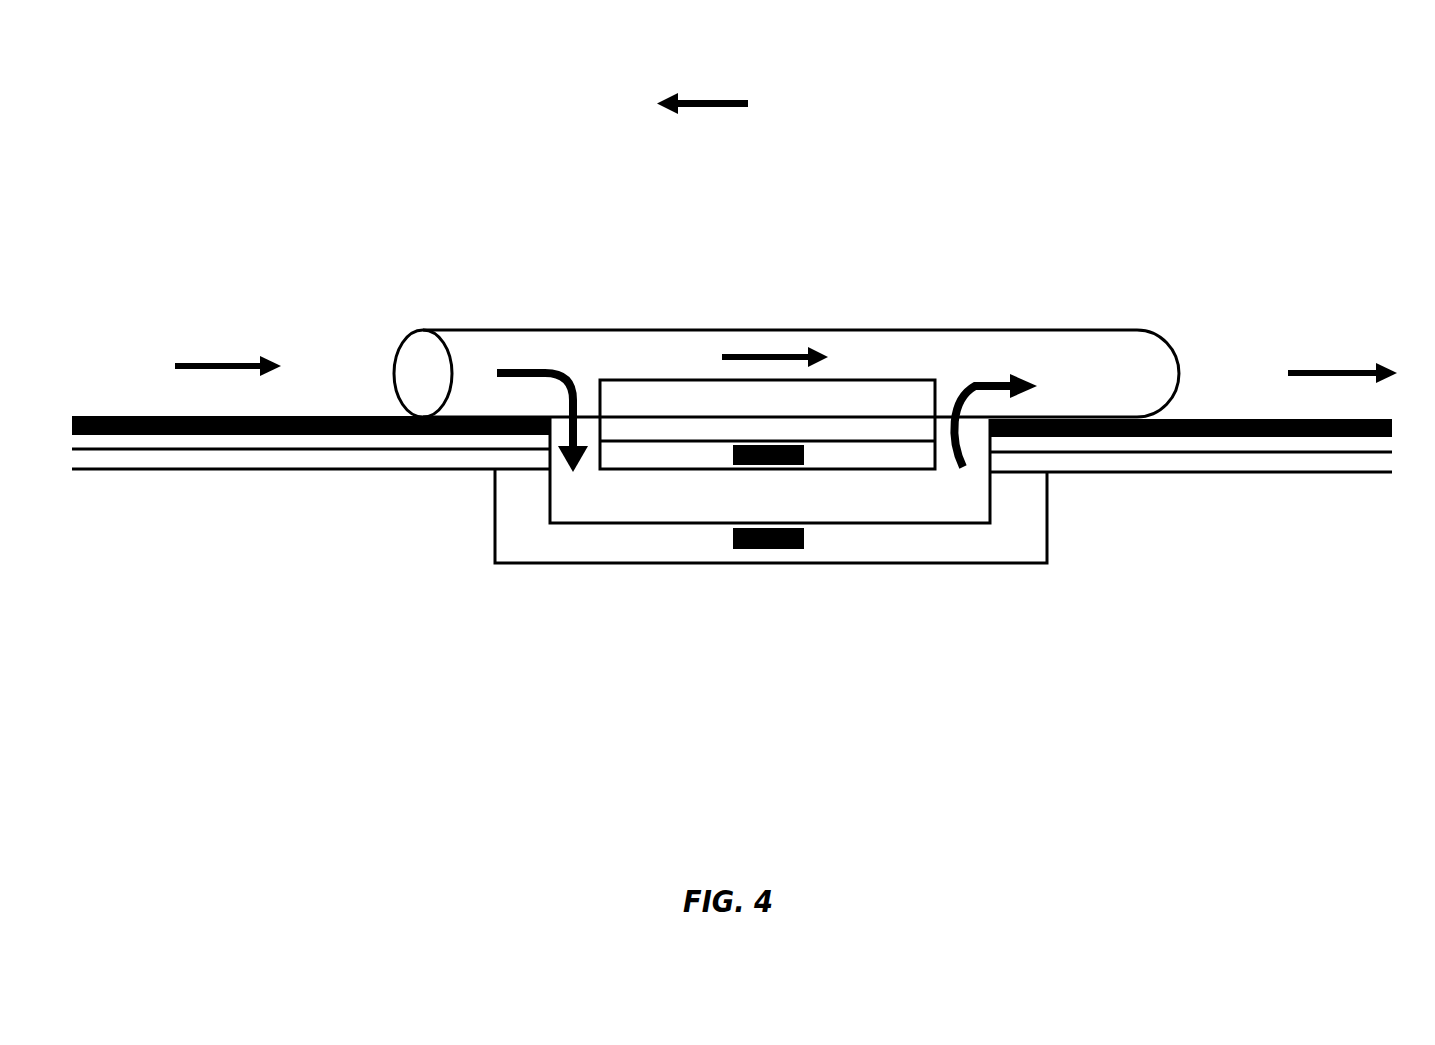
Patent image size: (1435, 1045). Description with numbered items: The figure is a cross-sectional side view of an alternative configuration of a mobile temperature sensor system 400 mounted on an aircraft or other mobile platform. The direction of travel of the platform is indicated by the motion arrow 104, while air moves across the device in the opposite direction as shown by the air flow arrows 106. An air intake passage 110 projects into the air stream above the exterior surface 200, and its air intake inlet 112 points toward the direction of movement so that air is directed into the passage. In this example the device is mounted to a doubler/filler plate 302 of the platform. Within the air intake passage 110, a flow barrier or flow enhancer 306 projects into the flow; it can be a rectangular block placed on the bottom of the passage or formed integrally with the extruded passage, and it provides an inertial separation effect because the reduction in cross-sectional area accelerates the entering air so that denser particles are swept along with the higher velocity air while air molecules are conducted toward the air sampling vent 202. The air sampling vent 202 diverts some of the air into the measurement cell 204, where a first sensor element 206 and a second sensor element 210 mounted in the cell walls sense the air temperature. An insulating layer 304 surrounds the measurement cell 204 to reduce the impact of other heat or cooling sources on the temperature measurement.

The mobile temperature sensor system 400 is at (303, 147).
The motion arrow 104 is at (740, 97).
The air flow arrows 106 is at (222, 352).
The air intake passage 110 is at (662, 358).
The air intake inlet 112 is at (422, 363).
The exterior surface 200 is at (1210, 412).
The air sampling vent 202 is at (583, 375).
The measurement cell 204 is at (600, 497).
The first sensor element 206 is at (792, 470).
The second sensor element 210 is at (790, 550).
The doubler/filler plate 302 is at (1280, 462).
The insulating layer 304 is at (635, 547).
The flow barrier or flow enhancer 306 is at (845, 410).